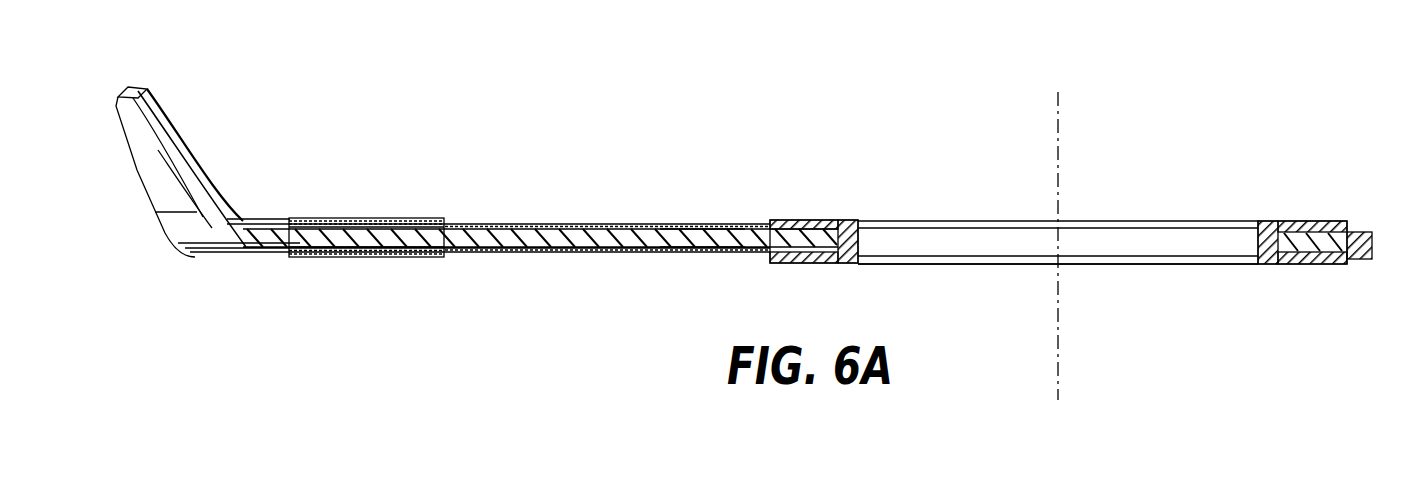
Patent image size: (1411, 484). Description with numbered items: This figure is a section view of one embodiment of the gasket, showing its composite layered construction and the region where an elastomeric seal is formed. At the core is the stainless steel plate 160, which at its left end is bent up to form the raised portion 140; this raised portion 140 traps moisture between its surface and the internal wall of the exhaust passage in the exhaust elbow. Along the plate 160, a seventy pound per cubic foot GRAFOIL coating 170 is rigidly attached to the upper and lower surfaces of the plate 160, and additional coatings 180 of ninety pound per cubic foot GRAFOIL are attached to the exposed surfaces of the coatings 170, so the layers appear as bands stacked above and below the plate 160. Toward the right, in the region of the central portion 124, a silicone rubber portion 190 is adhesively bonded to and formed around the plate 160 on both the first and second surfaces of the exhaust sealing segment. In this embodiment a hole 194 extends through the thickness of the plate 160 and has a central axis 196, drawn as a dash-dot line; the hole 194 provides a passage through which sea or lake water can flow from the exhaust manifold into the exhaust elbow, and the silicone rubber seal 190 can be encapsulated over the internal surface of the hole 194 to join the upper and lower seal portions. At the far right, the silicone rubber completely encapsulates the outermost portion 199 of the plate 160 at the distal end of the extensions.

The raised portion 140 is at (172, 152).
The additional coatings 180 is at (330, 216).
The coating 170 is at (520, 224).
The stainless steel plate 160 is at (690, 234).
The silicone rubber portion 190 is at (830, 220).
The hole 194 is at (1103, 243).
The central portion 124 is at (1150, 266).
The central axis 196 is at (1062, 115).
The outermost portion 199 is at (1335, 250).